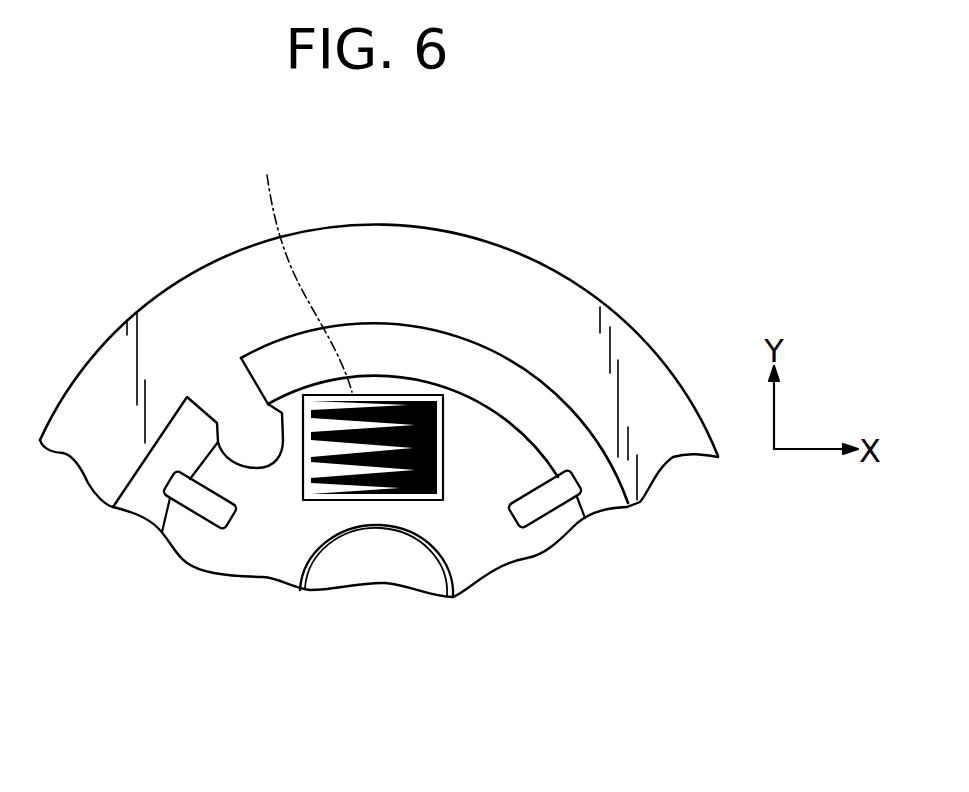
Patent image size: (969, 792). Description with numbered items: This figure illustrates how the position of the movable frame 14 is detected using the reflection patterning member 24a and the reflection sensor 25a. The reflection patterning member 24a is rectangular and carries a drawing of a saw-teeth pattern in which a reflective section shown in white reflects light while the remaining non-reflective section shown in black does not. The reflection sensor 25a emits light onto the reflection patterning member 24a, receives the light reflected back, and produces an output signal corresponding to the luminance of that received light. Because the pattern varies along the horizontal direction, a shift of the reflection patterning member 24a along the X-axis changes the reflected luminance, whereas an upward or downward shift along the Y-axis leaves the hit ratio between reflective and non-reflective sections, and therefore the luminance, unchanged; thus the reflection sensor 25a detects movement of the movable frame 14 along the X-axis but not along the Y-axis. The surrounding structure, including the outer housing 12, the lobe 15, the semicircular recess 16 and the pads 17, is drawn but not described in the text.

The outer housing / frame 12 is at (550, 313).
The movable frame 14 is at (473, 423).
The protruding lobe portion 15 is at (237, 403).
The semicircular recess 16 is at (378, 567).
The mounting pads 17 is at (203, 505).
The reflection patterning member 24a is at (380, 400).
The reflection sensor 25a is at (294, 268).